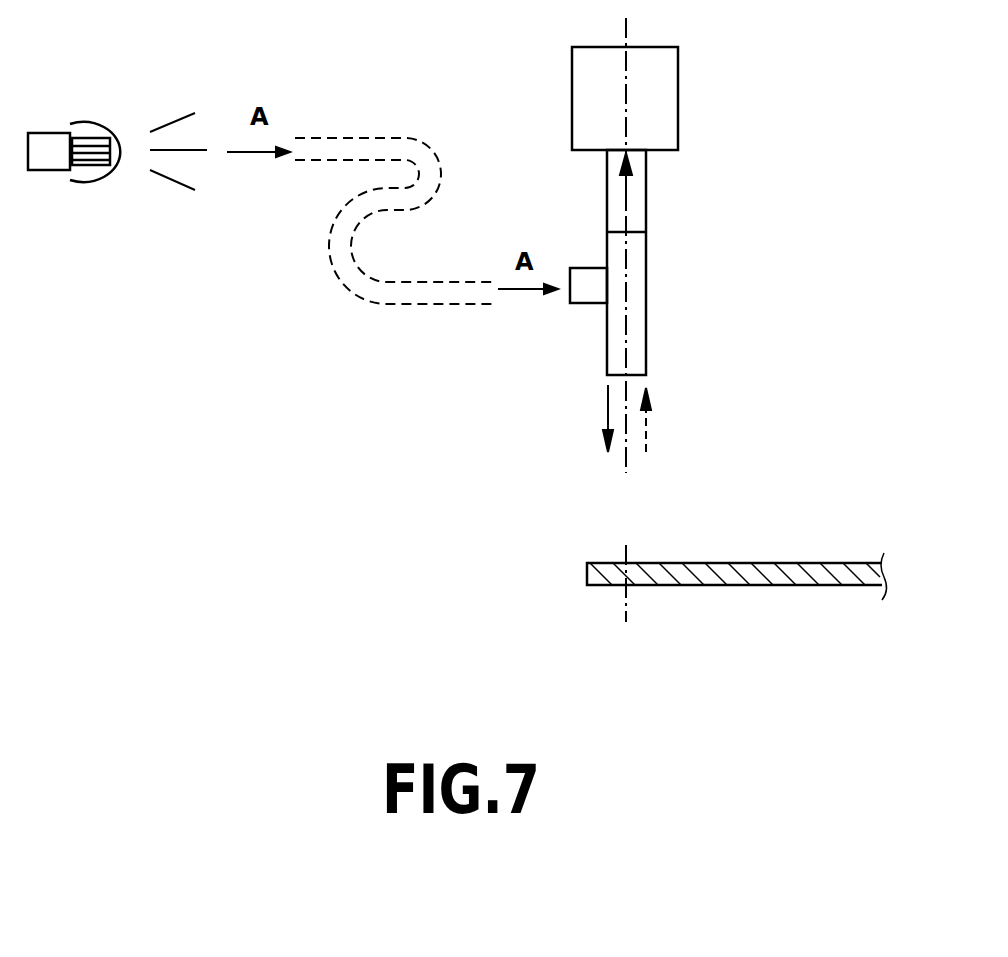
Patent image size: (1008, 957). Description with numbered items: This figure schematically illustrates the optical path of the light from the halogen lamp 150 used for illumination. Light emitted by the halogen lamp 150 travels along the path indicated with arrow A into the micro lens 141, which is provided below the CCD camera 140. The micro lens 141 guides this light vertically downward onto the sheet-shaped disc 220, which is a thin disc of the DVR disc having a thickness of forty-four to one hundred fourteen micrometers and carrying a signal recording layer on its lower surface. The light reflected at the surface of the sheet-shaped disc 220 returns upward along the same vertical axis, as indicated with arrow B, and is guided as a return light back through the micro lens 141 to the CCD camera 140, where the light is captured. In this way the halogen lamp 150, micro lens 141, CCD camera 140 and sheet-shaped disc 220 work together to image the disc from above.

The halogen lamp 150 is at (45, 137).
The CCD camera 140 is at (665, 77).
The micro lens 141 is at (647, 263).
The sheet-shaped disc 220 is at (587, 575).